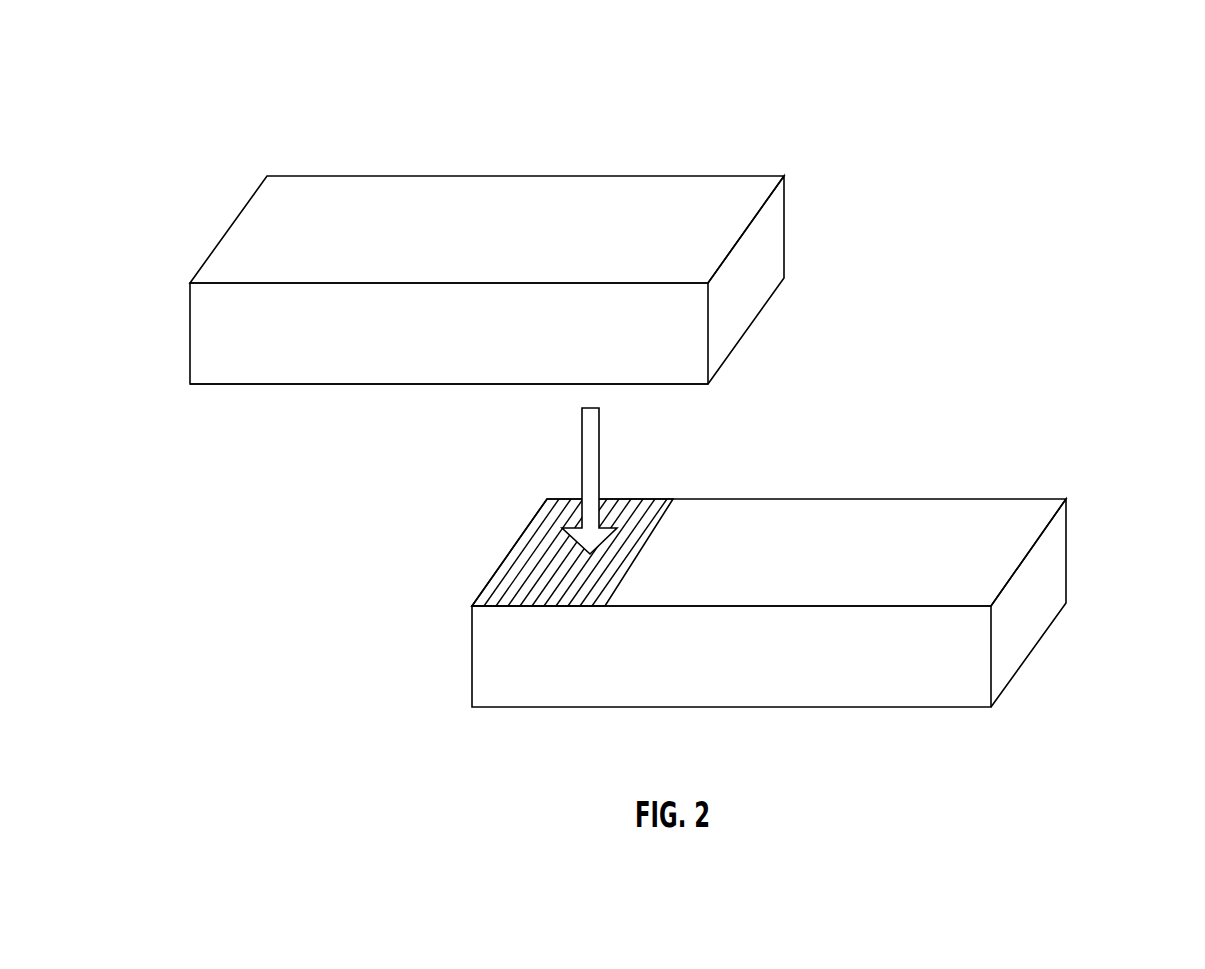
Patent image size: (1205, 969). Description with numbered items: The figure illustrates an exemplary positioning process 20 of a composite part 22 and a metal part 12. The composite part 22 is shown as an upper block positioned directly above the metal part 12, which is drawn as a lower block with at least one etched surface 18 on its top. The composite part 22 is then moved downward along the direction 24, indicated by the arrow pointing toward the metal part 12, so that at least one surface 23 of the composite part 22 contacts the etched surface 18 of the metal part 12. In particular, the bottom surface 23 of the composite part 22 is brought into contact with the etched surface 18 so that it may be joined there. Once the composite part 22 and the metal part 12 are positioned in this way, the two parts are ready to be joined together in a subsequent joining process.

The metal part 12 is at (1047, 575).
The etched surface 18 is at (523, 565).
The positioning process 20 is at (1120, 102).
The composite part 22 is at (341, 195).
The surface of the composite part 23 is at (673, 385).
The direction 24 is at (592, 450).